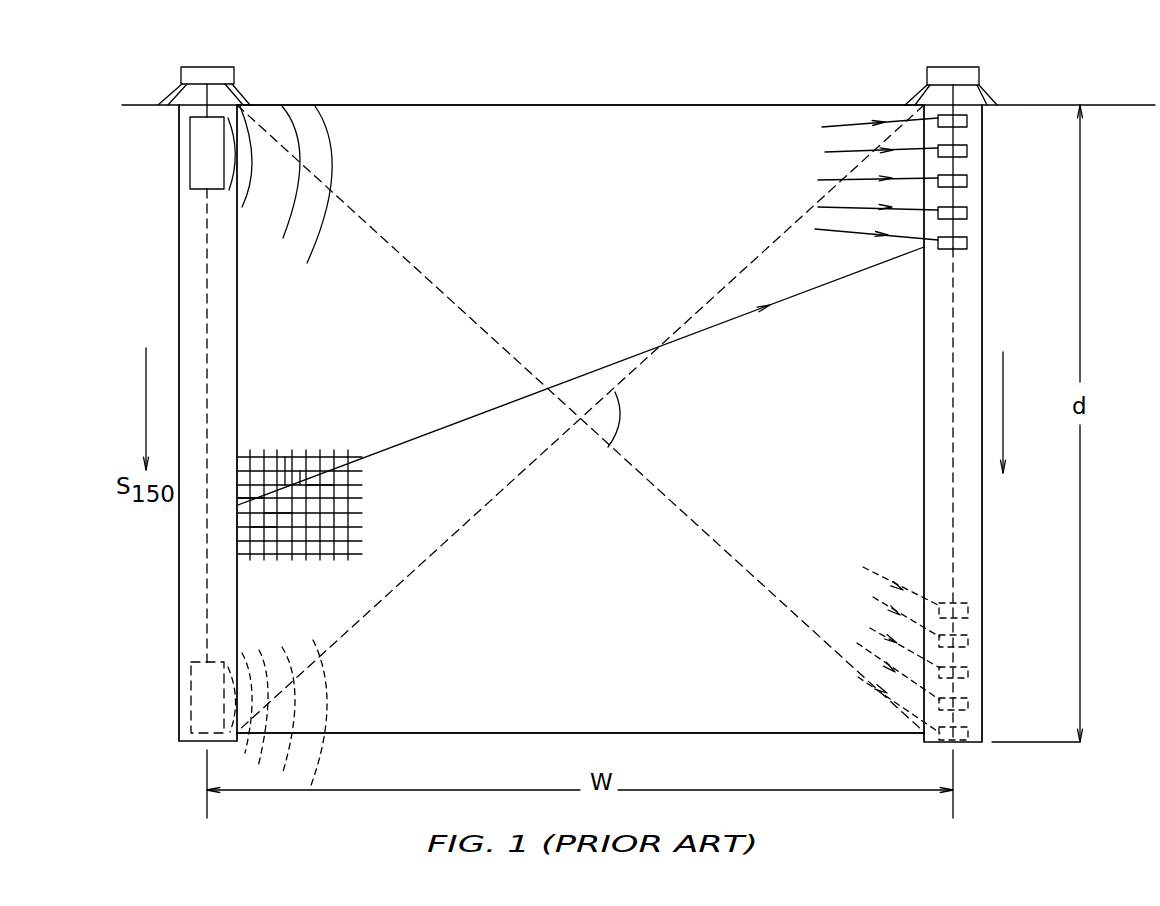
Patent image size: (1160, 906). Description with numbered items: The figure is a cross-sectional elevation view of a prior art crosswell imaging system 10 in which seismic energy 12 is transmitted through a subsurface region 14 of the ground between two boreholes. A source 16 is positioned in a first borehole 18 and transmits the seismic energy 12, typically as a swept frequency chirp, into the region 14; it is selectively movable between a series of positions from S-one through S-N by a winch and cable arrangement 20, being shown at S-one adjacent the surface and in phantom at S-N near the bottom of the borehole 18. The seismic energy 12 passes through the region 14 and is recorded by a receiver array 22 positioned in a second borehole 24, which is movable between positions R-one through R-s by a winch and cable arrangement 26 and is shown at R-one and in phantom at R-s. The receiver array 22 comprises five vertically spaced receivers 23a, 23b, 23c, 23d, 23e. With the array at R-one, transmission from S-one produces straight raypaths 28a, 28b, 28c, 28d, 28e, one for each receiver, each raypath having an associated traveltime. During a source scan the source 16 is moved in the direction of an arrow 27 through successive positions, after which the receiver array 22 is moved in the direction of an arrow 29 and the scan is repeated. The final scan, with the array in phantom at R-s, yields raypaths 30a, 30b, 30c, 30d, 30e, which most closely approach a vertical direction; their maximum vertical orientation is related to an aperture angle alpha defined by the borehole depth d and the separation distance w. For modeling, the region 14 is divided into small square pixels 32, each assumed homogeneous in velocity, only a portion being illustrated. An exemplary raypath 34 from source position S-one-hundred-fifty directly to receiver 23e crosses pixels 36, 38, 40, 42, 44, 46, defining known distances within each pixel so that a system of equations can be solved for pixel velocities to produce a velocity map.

The crosswell imaging system 10 is at (690, 88).
The seismic energy 12 is at (330, 145).
The subsurface region 14 is at (580, 237).
The source 16 is at (190, 175).
The first borehole 18 is at (238, 377).
The winch and cable arrangement 20 is at (212, 67).
The receiver array 22 is at (960, 253).
The receiver 23a is at (967, 121).
The receiver 23b is at (967, 151).
The receiver 23c is at (967, 181).
The receiver 23d is at (967, 213).
The receiver 23e is at (967, 244).
The second borehole 24 is at (925, 373).
The winch and cable arrangement 26 is at (975, 67).
The arrow 27 is at (146, 418).
The raypath 28a is at (852, 127).
The raypath 28b is at (840, 153).
The raypath 28c is at (857, 183).
The raypath 28d is at (857, 210).
The raypath 28e is at (882, 237).
The arrow 29 is at (1003, 403).
The raypath 30a is at (878, 567).
The raypath 30b is at (877, 600).
The raypath 30c is at (872, 632).
The raypath 30d is at (870, 652).
The raypath 30e is at (865, 678).
The pixels 32 is at (297, 458).
The raypath 34 is at (437, 430).
The pixel 36 is at (250, 510).
The pixel 38 is at (258, 513).
The pixel 40 is at (272, 497).
The pixel 42 is at (290, 487).
The pixel 44 is at (300, 480).
The pixel 46 is at (313, 487).